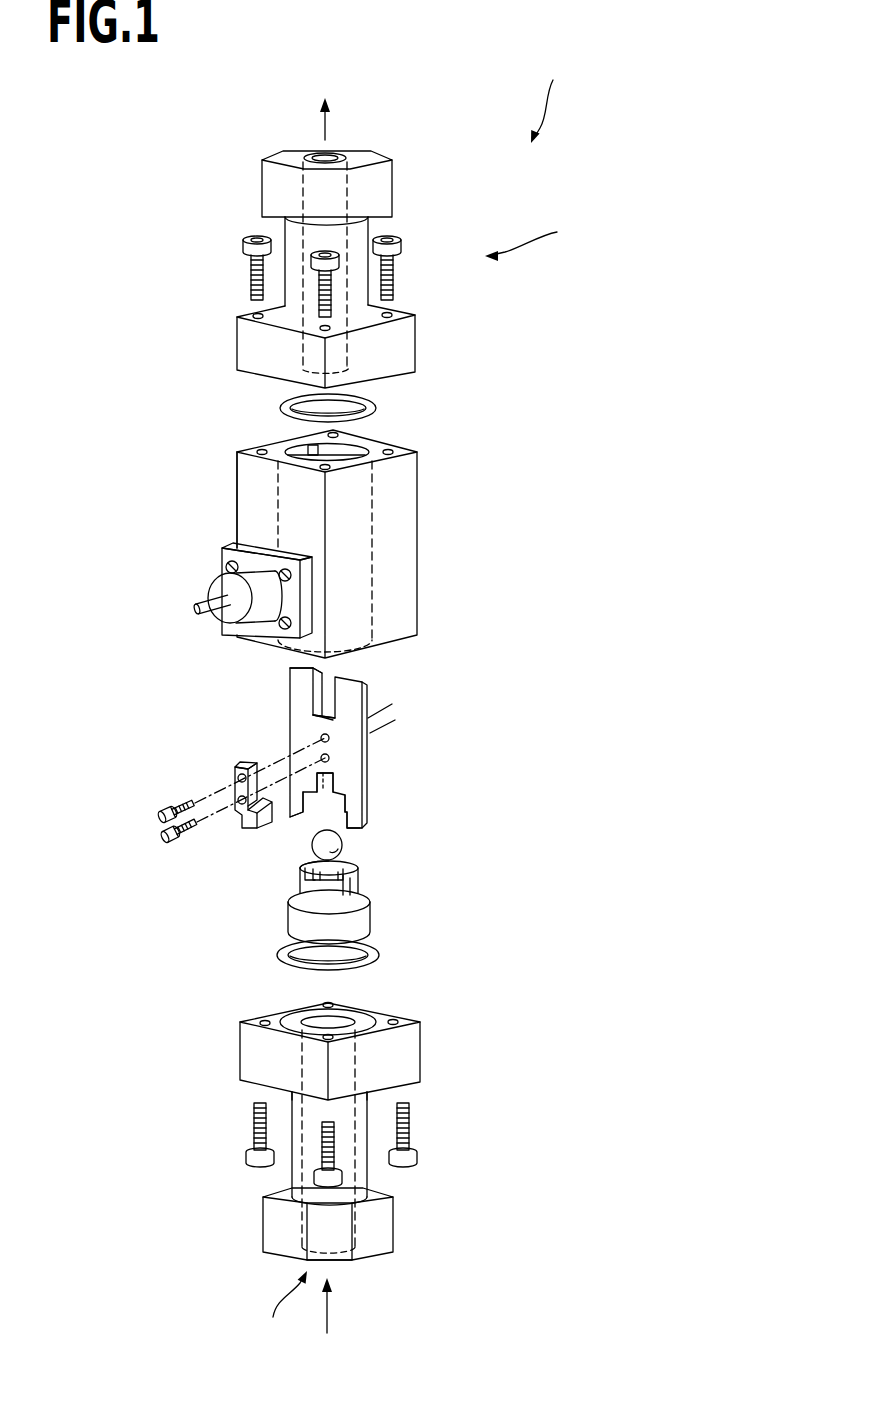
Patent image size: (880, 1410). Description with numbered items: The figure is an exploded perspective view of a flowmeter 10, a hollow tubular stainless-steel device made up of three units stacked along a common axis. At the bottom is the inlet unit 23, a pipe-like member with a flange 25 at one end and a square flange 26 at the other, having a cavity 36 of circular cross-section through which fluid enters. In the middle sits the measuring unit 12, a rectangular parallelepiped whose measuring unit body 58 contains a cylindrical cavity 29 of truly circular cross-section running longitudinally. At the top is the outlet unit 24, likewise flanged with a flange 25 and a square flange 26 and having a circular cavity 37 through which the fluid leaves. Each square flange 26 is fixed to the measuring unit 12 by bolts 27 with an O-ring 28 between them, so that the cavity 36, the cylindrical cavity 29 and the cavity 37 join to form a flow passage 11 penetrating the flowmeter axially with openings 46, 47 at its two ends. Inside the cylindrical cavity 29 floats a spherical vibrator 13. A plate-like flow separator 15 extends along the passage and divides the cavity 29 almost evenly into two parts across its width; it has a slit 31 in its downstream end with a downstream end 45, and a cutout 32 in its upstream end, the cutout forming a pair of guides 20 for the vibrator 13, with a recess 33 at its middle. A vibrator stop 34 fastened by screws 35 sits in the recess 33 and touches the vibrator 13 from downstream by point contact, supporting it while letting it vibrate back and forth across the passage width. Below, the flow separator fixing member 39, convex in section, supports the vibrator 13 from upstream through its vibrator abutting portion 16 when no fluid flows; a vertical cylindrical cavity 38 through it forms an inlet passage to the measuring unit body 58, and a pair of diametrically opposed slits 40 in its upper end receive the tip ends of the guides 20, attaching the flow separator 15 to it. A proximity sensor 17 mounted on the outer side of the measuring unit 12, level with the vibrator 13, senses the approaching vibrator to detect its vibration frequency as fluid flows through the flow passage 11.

The flowmeter 10 is at (559, 101).
The flow passage 11 is at (279, 1313).
The measuring unit 12 is at (458, 576).
The vibrator 13 is at (343, 842).
The flow separator 15 is at (367, 743).
The vibrator abutting portion 16 is at (313, 867).
The proximity sensor 17 is at (217, 582).
The guides 20 is at (362, 790).
The inlet unit 23 is at (457, 1073).
The outlet unit 24 is at (537, 236).
The flange 25 is at (262, 188).
The flange 26 is at (417, 358).
The bolts 27 is at (250, 282).
The O-ring 28 is at (376, 407).
The cylindrical cavity 29 is at (372, 527).
The slit 31 is at (322, 700).
The cutout 32 is at (345, 814).
The recess 33 is at (362, 788).
The vibrator stop 34 is at (240, 823).
The screws 35 is at (180, 812).
The cavity 36 is at (370, 1163).
The cavity 37 is at (343, 187).
The cylindrical cavity 38 is at (340, 868).
The flow separator fixing member 39 is at (373, 912).
The slits 40 is at (357, 893).
The downstream end 45 is at (322, 712).
The opening 46 is at (353, 1265).
The opening 47 is at (335, 150).
The measuring unit body 58 is at (220, 499).